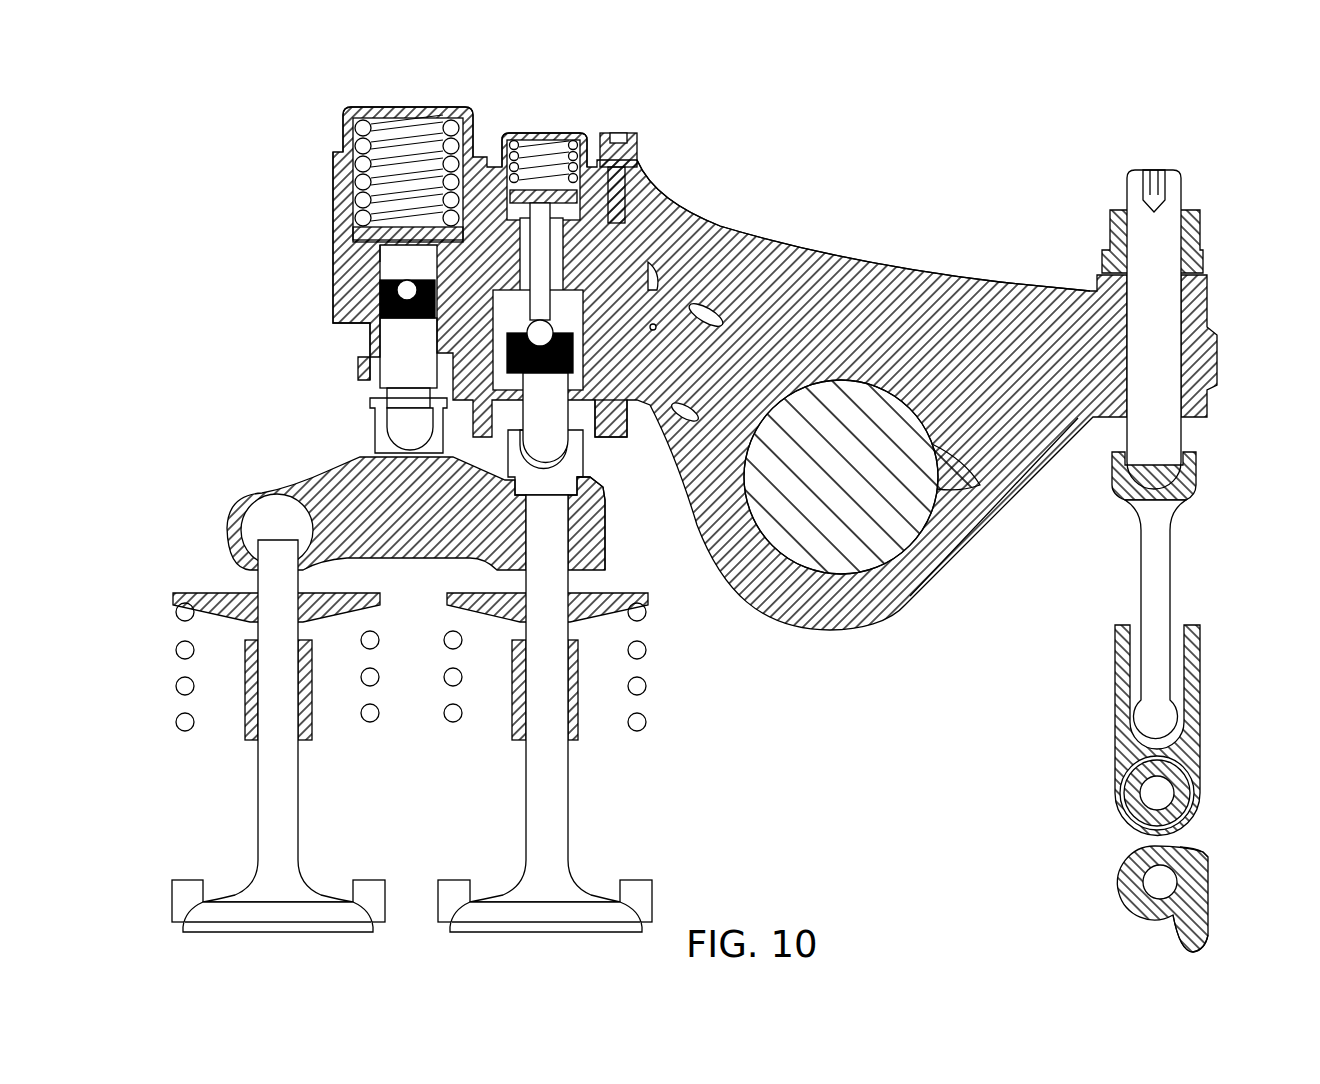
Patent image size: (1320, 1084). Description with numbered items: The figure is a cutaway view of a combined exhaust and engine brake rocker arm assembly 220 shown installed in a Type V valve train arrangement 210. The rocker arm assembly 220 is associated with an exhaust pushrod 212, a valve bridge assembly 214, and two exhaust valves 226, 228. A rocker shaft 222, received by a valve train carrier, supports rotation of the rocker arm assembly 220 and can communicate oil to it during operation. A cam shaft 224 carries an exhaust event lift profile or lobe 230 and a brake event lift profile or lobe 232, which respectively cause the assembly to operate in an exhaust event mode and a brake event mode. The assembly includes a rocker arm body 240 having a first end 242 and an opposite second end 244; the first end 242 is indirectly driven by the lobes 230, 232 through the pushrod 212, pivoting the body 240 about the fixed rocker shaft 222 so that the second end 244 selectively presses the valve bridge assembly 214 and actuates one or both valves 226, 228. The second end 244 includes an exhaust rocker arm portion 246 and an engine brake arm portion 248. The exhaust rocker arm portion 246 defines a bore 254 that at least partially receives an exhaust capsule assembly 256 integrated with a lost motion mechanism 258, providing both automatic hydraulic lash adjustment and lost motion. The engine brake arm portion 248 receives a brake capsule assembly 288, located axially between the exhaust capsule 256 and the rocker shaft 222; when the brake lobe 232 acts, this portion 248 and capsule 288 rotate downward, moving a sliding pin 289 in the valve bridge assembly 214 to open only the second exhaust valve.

The Type V valve train arrangement 210 is at (775, 356).
The exhaust pushrod 212 is at (1155, 575).
The valve bridge assembly 214 is at (229, 498).
The combined exhaust and engine brake rocker arm assembly 220 is at (808, 233).
The rocker shaft 222 is at (825, 500).
The cam shaft 224 is at (1163, 882).
The exhaust valve 226 is at (272, 782).
The exhaust valve 228 is at (550, 778).
The exhaust event lift profile or lobe 230 is at (1192, 945).
The brake event lift profile or lobe 232 is at (1210, 853).
The rocker arm body 240 is at (848, 275).
The first end 242 is at (1216, 325).
The second end 244 is at (345, 268).
The exhaust rocker arm portion 246 is at (352, 283).
The engine brake arm portion 248 is at (628, 407).
The bore 254 is at (360, 252).
The exhaust capsule assembly 256 is at (350, 333).
The lost motion mechanism 258 is at (320, 197).
The brake capsule assembly 288 is at (607, 238).
The sliding pin 289 is at (552, 542).